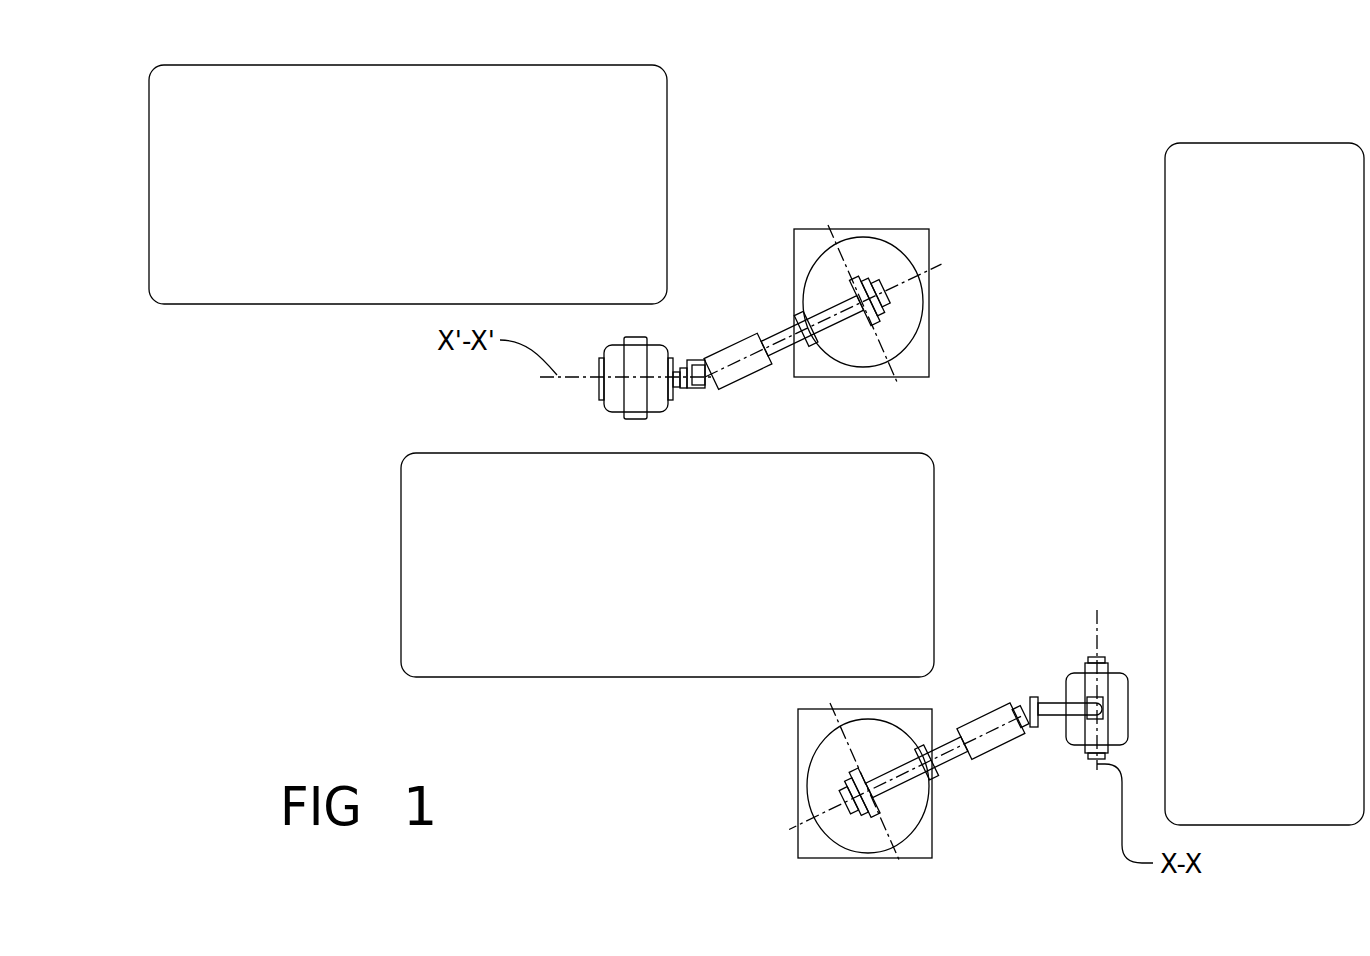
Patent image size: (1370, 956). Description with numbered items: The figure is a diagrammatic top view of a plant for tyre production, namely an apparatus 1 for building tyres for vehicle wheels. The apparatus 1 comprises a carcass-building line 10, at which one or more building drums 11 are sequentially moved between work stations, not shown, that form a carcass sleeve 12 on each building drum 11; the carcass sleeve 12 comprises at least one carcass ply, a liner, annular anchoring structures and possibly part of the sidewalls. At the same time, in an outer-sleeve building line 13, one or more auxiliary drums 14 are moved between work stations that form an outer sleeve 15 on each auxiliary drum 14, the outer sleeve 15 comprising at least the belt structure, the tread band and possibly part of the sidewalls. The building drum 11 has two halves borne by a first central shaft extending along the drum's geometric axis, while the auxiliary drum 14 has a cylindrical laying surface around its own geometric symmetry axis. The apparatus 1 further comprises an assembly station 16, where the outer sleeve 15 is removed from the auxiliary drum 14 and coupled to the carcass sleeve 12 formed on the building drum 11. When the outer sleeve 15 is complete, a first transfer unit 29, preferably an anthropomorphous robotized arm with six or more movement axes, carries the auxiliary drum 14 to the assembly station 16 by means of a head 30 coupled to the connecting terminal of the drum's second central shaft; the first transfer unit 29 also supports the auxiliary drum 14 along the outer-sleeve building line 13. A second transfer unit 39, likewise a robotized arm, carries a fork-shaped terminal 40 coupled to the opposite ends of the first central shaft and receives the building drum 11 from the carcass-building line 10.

The apparatus for building tyres 1 is at (938, 170).
The carcass-building line 10 is at (1230, 190).
The building drum 11 is at (1071, 677).
The carcass sleeve 12 is at (1067, 690).
The outer-sleeve building line 13 is at (592, 95).
The auxiliary drum 14 is at (607, 408).
The outer sleeve 15 is at (640, 410).
The assembly station 16 is at (895, 498).
The first transfer unit 29 is at (800, 356).
The head 30 is at (692, 390).
The second transfer unit 39 is at (945, 789).
The fork-shaped terminal 40 is at (1103, 677).